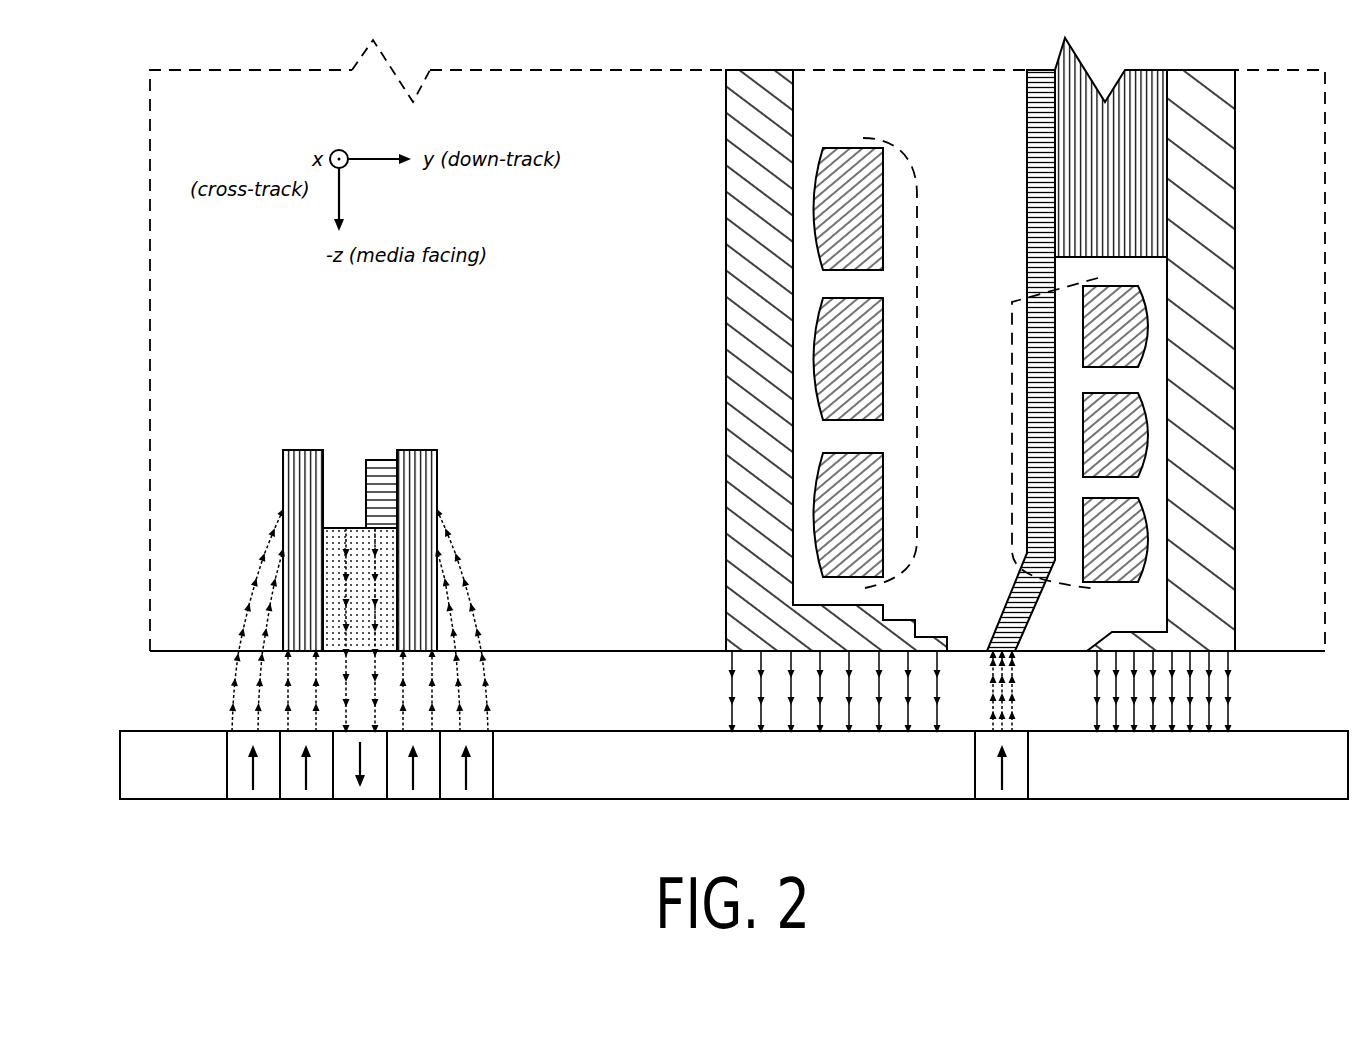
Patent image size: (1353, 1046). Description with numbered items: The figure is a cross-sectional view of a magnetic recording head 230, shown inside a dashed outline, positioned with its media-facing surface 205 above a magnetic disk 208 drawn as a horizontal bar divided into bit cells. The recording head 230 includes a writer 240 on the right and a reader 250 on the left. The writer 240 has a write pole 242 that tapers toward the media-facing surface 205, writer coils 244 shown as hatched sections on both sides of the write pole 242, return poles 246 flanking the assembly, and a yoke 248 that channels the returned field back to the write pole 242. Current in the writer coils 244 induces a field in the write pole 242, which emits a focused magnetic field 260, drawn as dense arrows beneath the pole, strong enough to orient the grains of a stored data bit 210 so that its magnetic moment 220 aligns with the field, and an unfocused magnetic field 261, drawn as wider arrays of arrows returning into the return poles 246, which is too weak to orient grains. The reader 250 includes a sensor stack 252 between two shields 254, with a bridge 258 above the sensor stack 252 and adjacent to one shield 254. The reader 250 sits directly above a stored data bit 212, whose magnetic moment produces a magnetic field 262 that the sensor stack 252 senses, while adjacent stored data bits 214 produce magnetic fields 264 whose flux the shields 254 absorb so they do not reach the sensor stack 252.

The media-facing surface 205 is at (630, 655).
The magnetic disk 208 is at (758, 785).
The stored data bit 210 is at (1015, 792).
The stored data bit 212 is at (357, 806).
The stored data bits 214 is at (267, 818).
The magnetic moment 220 is at (1002, 775).
The recording head 230 is at (1252, 55).
The writer 240 is at (978, 344).
The write pole 242 is at (1000, 625).
The writer coils 244 is at (1000, 420).
The return poles 246 is at (738, 620).
The yoke 248 is at (1140, 223).
The reader 250 is at (364, 495).
The sensor stack 252 is at (340, 528).
The shields 254 is at (298, 488).
The bridge 258 is at (380, 470).
The focused magnetic field 260 is at (1022, 710).
The unfocused magnetic field 261 is at (724, 710).
The magnetic field 262 is at (390, 674).
The magnetic fields 264 is at (226, 700).